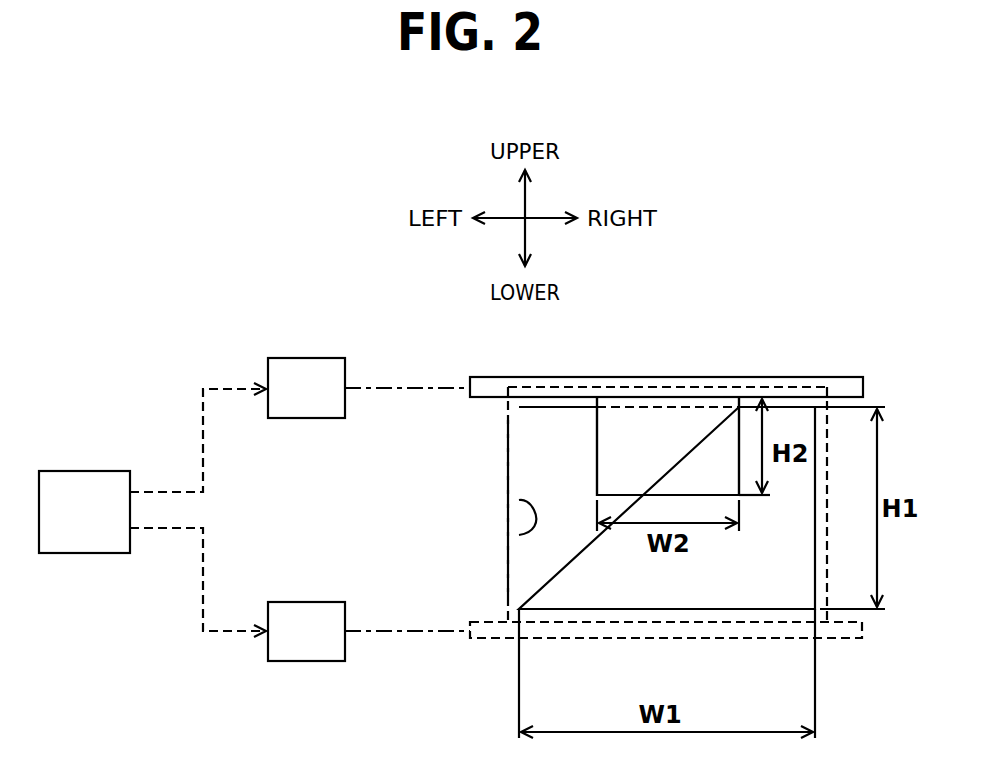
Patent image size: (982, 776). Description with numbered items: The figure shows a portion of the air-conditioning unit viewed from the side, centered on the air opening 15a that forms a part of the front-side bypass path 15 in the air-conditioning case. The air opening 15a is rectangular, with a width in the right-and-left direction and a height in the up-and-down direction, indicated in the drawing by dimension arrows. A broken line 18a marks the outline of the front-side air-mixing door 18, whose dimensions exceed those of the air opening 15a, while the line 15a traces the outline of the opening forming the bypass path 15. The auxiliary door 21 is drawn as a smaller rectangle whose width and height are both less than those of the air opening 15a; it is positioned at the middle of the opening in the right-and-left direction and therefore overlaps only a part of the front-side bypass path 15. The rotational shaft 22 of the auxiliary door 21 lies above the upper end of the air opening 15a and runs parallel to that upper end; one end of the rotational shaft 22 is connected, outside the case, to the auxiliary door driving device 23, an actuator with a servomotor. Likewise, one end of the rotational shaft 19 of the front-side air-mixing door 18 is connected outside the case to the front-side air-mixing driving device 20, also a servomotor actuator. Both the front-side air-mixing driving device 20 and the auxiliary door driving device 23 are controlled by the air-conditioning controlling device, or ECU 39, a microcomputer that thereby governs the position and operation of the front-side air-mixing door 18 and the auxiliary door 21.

The air-conditioning controlling device (ECU) 39 is at (90, 470).
The auxiliary door driving device 23 is at (315, 358).
The front-side air-mixing driving device 20 is at (310, 662).
The rotational shaft 22 is at (796, 377).
The auxiliary door 21 is at (622, 435).
The front-side air-mixing door 18 is at (718, 579).
The broken line (outline of front-side air-mixing door) 18a is at (508, 468).
The front-side bypass path 15 is at (442, 527).
The air opening 15a is at (519, 532).
The rotational shaft 19 is at (493, 643).